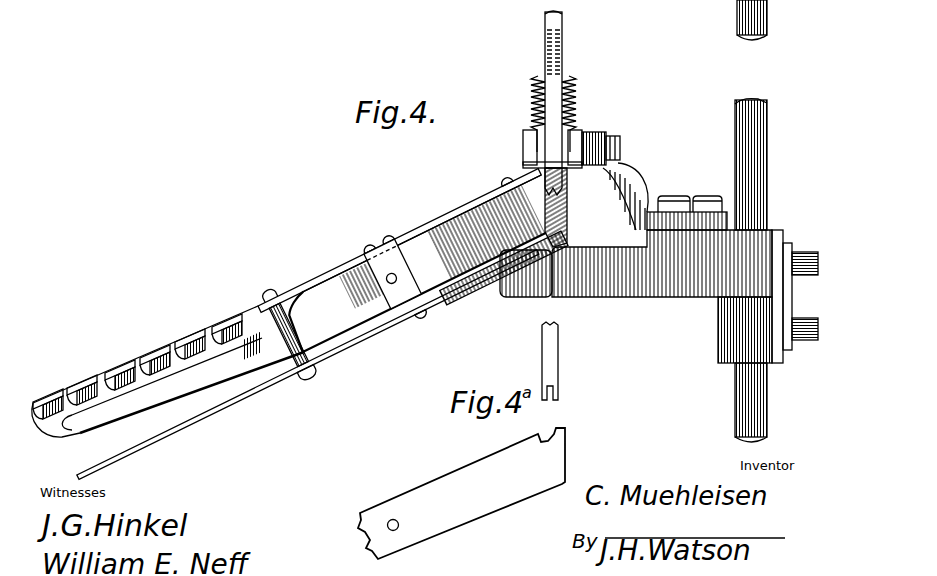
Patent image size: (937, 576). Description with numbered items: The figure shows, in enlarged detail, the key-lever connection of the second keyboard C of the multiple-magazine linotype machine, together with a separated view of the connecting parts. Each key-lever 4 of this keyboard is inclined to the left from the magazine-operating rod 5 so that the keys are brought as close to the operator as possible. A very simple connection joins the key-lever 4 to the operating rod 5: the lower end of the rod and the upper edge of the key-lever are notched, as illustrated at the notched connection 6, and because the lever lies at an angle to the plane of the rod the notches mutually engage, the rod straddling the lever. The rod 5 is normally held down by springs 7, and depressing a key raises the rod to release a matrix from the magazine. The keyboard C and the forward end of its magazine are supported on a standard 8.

In FIG. 4, the key-lever 4 is at (421, 260).
In FIG. 4a, the key-lever 4 is at (461, 493).
In FIG. 4, the magazine-operating rod 5 is at (563, 27).
In FIG. 4a, the magazine-operating rod 5 is at (554, 368).
In FIG. 4, the notched connection 6 is at (566, 193).
In FIG. 4a, the notched connection 6 is at (550, 413).
In FIG. 4, the spring 7 is at (536, 97).
In FIG. 4, the standard 8 is at (764, 221).
In FIG. 4, the keyboard C is at (168, 371).